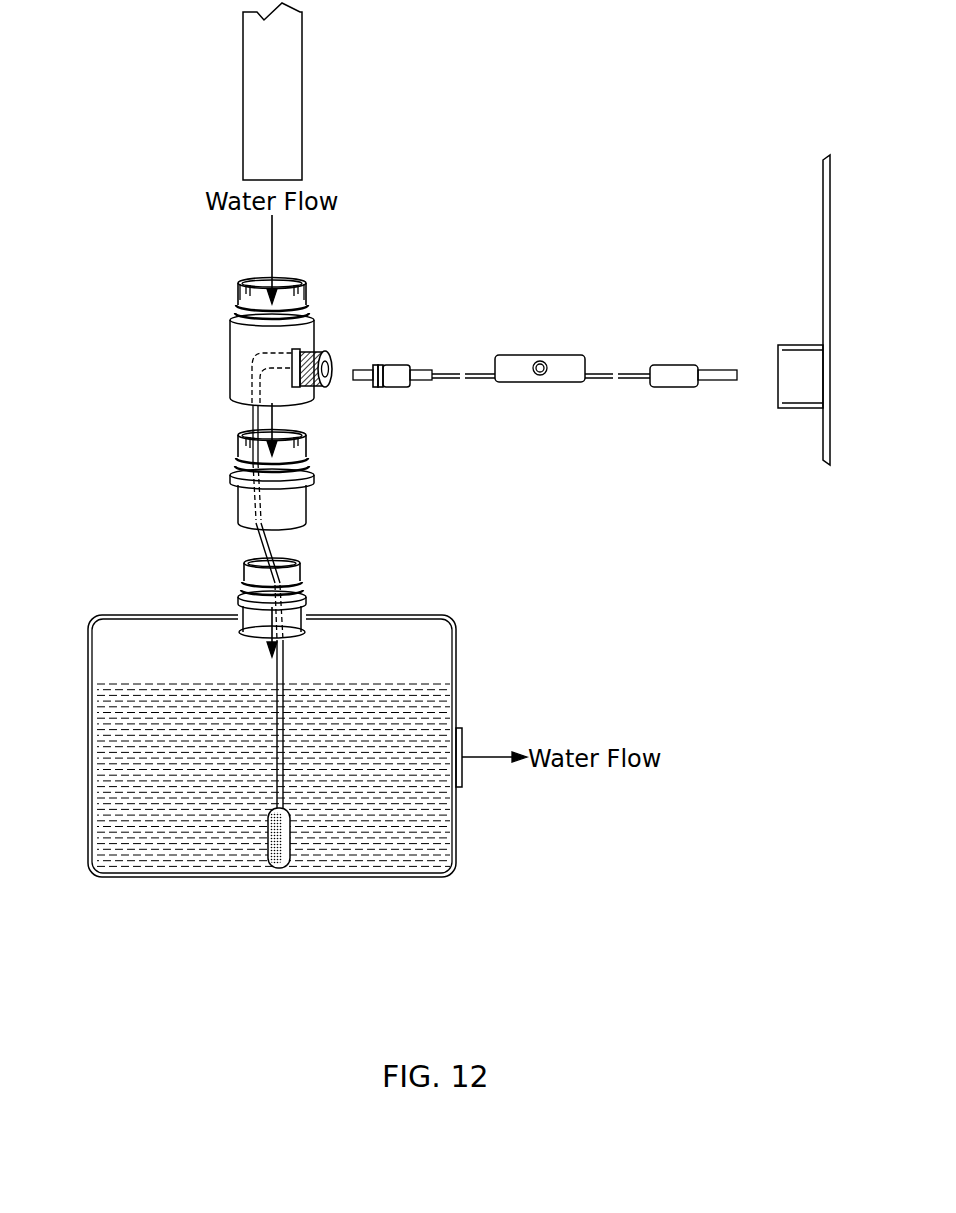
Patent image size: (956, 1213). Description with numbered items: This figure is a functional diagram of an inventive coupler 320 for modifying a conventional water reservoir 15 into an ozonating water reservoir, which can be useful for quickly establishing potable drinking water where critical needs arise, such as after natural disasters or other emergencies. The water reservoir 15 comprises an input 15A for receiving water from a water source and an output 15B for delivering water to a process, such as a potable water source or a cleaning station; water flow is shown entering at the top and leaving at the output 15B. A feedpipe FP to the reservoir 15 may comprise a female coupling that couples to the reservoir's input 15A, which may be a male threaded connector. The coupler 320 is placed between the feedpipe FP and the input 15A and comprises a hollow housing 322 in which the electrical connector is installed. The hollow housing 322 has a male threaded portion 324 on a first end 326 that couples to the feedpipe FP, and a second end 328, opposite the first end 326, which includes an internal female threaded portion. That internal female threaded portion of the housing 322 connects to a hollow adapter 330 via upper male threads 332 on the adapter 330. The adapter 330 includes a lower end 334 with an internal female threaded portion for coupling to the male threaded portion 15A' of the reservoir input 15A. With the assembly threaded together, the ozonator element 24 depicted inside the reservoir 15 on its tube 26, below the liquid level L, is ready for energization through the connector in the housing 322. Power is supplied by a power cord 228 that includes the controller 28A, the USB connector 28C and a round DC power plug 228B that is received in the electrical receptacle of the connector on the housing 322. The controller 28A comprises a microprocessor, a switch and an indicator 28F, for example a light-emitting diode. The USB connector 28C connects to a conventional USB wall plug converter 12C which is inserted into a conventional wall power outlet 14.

The feedpipe FP is at (292, 70).
The coupler 320 is at (227, 404).
The hollow housing 322 is at (230, 350).
The male threaded portion 324 is at (307, 292).
The first end 326 is at (230, 313).
The second end 328 is at (243, 398).
The hollow adapter 330 is at (232, 478).
The upper male threads 332 is at (239, 443).
The lower end 334 is at (318, 537).
The round DC power plug 228B is at (340, 352).
The power cord 228 is at (551, 399).
The controller 28A is at (575, 330).
The indicator 28F is at (533, 373).
The USB connector 28C is at (701, 343).
The wall power outlet 14 is at (822, 188).
The receptacle 12C is at (792, 405).
The water reservoir 15 is at (266, 746).
The input 15A is at (184, 568).
The male threaded portion 15A' is at (312, 591).
The output 15B is at (462, 742).
The liquid level L is at (408, 700).
The ozonator element 24 is at (270, 847).
The sensor tube 26 is at (283, 778).